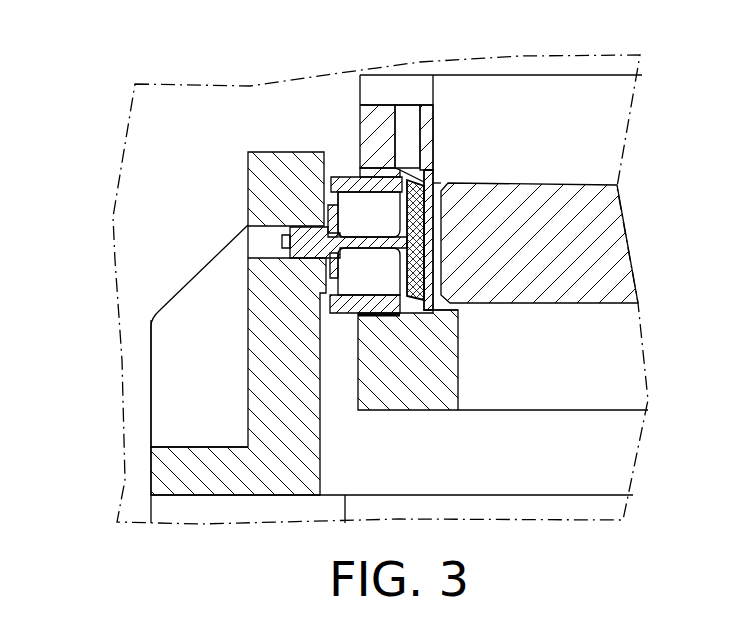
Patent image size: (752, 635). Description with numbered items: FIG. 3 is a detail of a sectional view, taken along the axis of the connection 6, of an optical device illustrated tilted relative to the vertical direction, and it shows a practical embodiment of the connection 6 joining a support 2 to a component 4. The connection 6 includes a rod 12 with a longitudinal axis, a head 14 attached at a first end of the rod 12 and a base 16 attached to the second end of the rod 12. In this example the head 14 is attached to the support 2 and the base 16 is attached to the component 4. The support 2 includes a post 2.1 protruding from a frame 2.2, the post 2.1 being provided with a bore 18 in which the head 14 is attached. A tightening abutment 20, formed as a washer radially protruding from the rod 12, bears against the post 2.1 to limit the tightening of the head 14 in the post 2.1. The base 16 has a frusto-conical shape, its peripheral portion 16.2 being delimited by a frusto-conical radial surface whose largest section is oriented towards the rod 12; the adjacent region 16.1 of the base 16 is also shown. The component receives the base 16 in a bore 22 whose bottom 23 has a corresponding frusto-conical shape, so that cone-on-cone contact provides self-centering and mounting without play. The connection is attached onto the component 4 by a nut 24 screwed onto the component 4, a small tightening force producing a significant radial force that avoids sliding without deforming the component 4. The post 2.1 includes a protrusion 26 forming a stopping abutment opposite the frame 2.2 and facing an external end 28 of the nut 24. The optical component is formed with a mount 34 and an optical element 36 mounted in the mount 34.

The support 2 is at (128, 388).
The post 2.1 is at (203, 295).
The frame 2.2 is at (473, 494).
The component 4 is at (542, 94).
The connection 6 is at (370, 220).
The rod 12 is at (333, 291).
The head 14 is at (248, 224).
The base 16 is at (428, 316).
The seal ring 16.1 is at (412, 264).
The peripheral portion 16.2 is at (437, 161).
The bore 18 is at (265, 239).
The tightening abutment 20 is at (326, 283).
The bore 22 is at (378, 300).
The bottom 23 is at (432, 290).
The nut 24 is at (416, 310).
The protrusion 26 is at (327, 197).
The external end 28 is at (346, 179).
The mount 34 is at (423, 130).
The optical element 36 is at (567, 221).